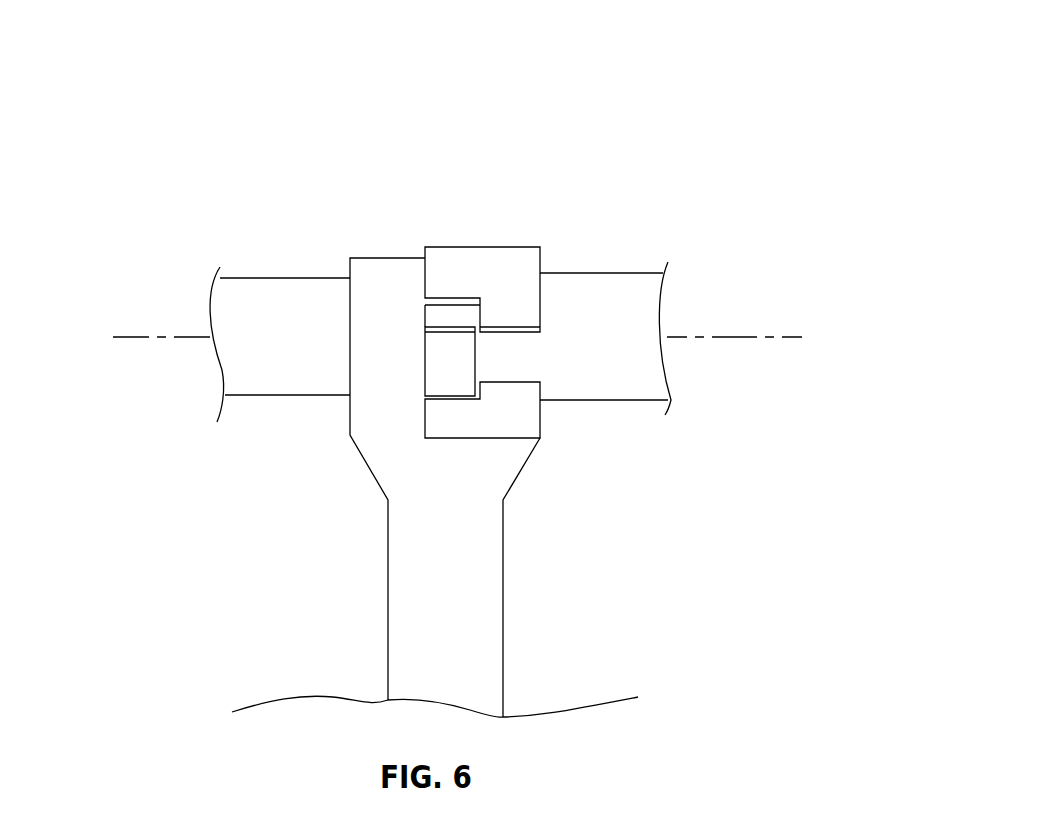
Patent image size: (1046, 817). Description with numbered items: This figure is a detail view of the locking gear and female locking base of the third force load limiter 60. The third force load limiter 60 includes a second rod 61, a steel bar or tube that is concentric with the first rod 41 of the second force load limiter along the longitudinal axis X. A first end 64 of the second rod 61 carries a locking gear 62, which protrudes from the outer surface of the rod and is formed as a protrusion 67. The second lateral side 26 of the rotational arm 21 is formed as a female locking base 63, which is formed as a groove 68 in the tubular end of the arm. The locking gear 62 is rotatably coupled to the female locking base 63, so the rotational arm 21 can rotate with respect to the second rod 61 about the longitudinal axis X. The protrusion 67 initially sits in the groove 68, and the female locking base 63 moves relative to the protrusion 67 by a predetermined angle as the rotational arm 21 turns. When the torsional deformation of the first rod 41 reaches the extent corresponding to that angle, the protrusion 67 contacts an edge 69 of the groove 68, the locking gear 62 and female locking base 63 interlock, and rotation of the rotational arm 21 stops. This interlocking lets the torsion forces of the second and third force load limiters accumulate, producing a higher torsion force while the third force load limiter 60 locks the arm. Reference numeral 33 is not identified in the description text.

The rotational arm 21 is at (483, 643).
The second lateral side 26 is at (484, 206).
The gap / clearance 33 is at (527, 350).
The first rod 41 is at (265, 292).
The third force load limiter 60 is at (600, 95).
The second rod 61 is at (646, 285).
The locking gear 62 is at (490, 365).
The female locking base 63 is at (535, 238).
The first end 64 is at (556, 411).
The protrusion 67 is at (448, 370).
The groove 68 is at (465, 317).
The edge 69 is at (437, 302).
The longitudinal axis X is at (130, 335).